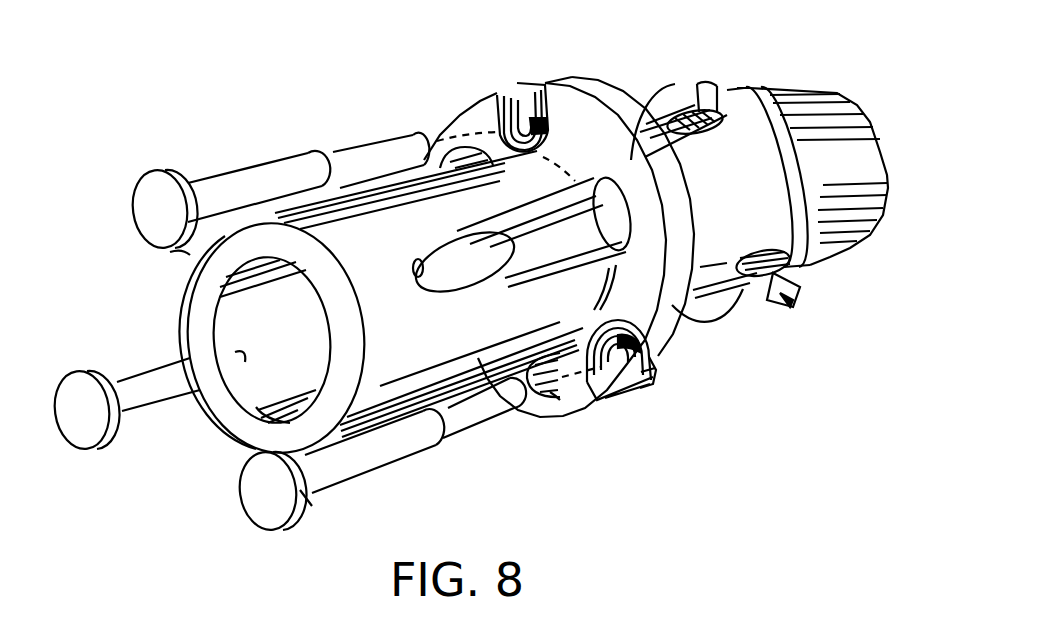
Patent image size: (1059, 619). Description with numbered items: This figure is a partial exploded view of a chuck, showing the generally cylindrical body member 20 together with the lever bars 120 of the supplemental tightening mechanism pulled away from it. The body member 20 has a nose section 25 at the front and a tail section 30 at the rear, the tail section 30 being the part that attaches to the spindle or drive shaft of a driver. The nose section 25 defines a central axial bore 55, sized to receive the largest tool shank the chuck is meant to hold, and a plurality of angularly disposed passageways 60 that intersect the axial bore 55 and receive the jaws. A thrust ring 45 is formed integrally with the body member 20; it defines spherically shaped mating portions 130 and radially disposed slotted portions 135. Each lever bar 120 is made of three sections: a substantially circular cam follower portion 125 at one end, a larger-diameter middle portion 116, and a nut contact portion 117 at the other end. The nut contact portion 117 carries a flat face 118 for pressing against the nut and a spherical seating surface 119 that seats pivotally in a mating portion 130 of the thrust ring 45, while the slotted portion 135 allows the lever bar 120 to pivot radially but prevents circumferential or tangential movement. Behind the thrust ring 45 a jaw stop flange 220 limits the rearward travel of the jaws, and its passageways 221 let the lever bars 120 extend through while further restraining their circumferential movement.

The body member 20 is at (560, 400).
The nose section 25 is at (315, 233).
The tail section 30 is at (810, 117).
The thrust ring 45 is at (575, 97).
The axial bore 55 is at (245, 362).
The angularly disposed passageways 60 is at (418, 262).
The middle portion 116 is at (350, 462).
The nut contact portion 117 is at (143, 173).
The flat face 118 is at (155, 203).
The seating surface 119 is at (187, 247).
The lever bar 120 is at (200, 176).
The cam follower portion 125 is at (400, 150).
The mating portion 130 is at (503, 93).
The slotted portion 135 is at (650, 373).
The jaw stop flange 220 is at (667, 103).
The passageways 221 is at (710, 92).